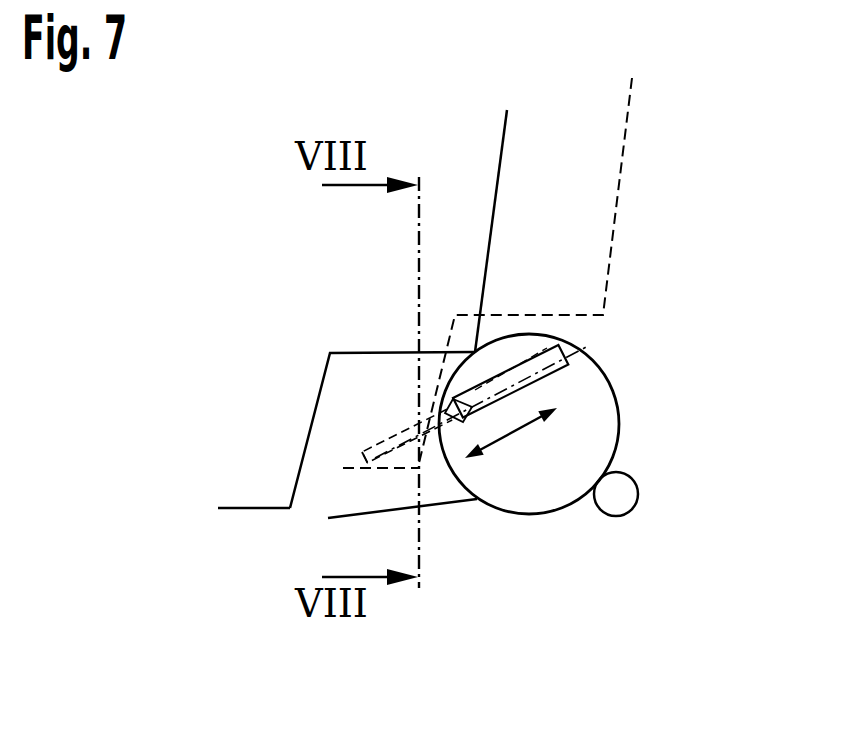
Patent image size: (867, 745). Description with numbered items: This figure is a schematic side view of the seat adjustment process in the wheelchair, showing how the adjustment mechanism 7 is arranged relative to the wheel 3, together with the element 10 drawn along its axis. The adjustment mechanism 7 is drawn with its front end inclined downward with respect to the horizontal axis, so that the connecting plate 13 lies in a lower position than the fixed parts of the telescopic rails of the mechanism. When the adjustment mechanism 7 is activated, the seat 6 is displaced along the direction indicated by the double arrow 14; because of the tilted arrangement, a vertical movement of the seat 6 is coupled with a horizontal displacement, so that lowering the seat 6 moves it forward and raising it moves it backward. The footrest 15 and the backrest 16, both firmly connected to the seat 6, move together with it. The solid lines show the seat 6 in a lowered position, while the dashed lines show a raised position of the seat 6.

The wheel 3 is at (617, 395).
The seat 6 is at (373, 353).
The adjustment mechanism 7 is at (560, 375).
The spindle 10 is at (580, 352).
The connecting plate 13 is at (373, 448).
The double arrow 14 is at (512, 433).
The footrest 15 is at (253, 503).
The backrest 16 is at (500, 150).